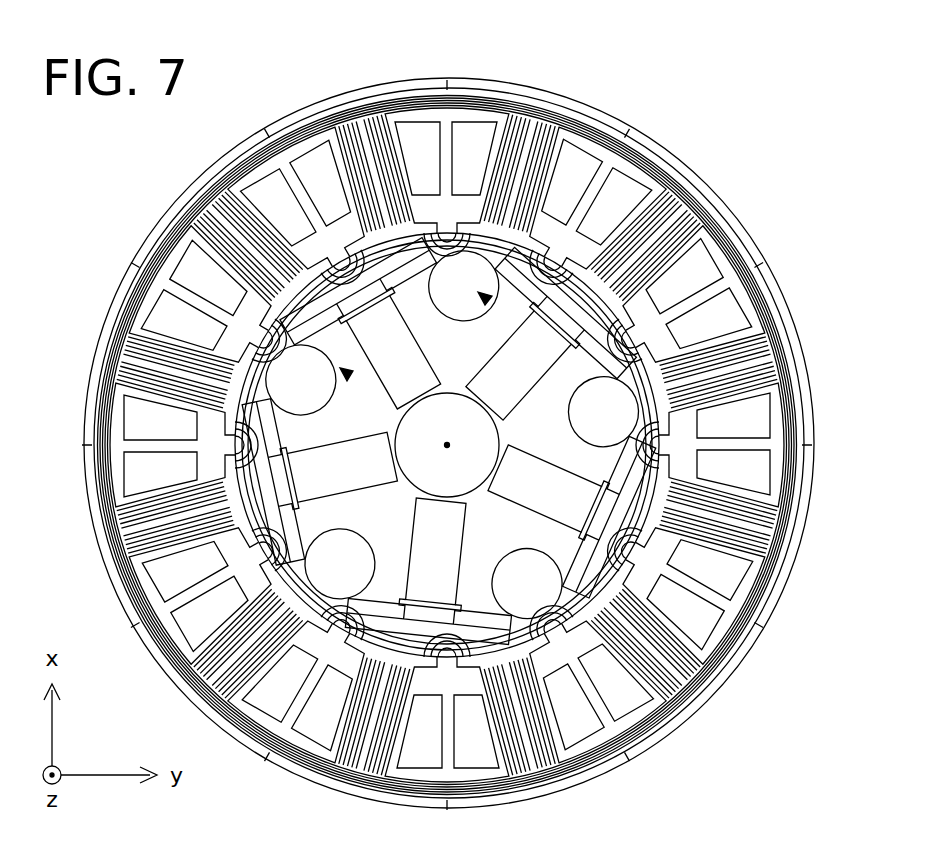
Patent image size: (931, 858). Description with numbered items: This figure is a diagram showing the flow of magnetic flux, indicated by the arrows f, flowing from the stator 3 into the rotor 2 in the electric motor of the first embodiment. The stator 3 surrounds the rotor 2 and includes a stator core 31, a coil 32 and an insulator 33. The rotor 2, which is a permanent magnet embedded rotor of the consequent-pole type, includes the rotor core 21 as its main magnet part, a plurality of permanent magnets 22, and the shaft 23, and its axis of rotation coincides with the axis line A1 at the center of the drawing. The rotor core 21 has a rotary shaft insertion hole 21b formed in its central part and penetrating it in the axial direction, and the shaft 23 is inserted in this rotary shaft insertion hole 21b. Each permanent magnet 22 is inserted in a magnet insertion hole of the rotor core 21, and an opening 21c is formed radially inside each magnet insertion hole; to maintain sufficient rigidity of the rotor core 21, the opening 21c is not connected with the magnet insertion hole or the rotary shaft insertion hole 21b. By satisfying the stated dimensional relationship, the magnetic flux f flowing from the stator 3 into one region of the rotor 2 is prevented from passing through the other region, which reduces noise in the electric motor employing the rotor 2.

The rotor 2 is at (444, 653).
The rotor core 21 is at (530, 578).
The rotary shaft insertion hole 21b is at (416, 400).
The opening 21c is at (417, 335).
The permanent magnet 22 is at (357, 287).
The shaft 23 is at (432, 467).
The stator 3 is at (442, 80).
The stator core 31 is at (470, 117).
The coil 32 is at (513, 160).
The insulator 33 is at (414, 147).
The axis line A1 is at (449, 443).
The magnetic flux f is at (542, 105).